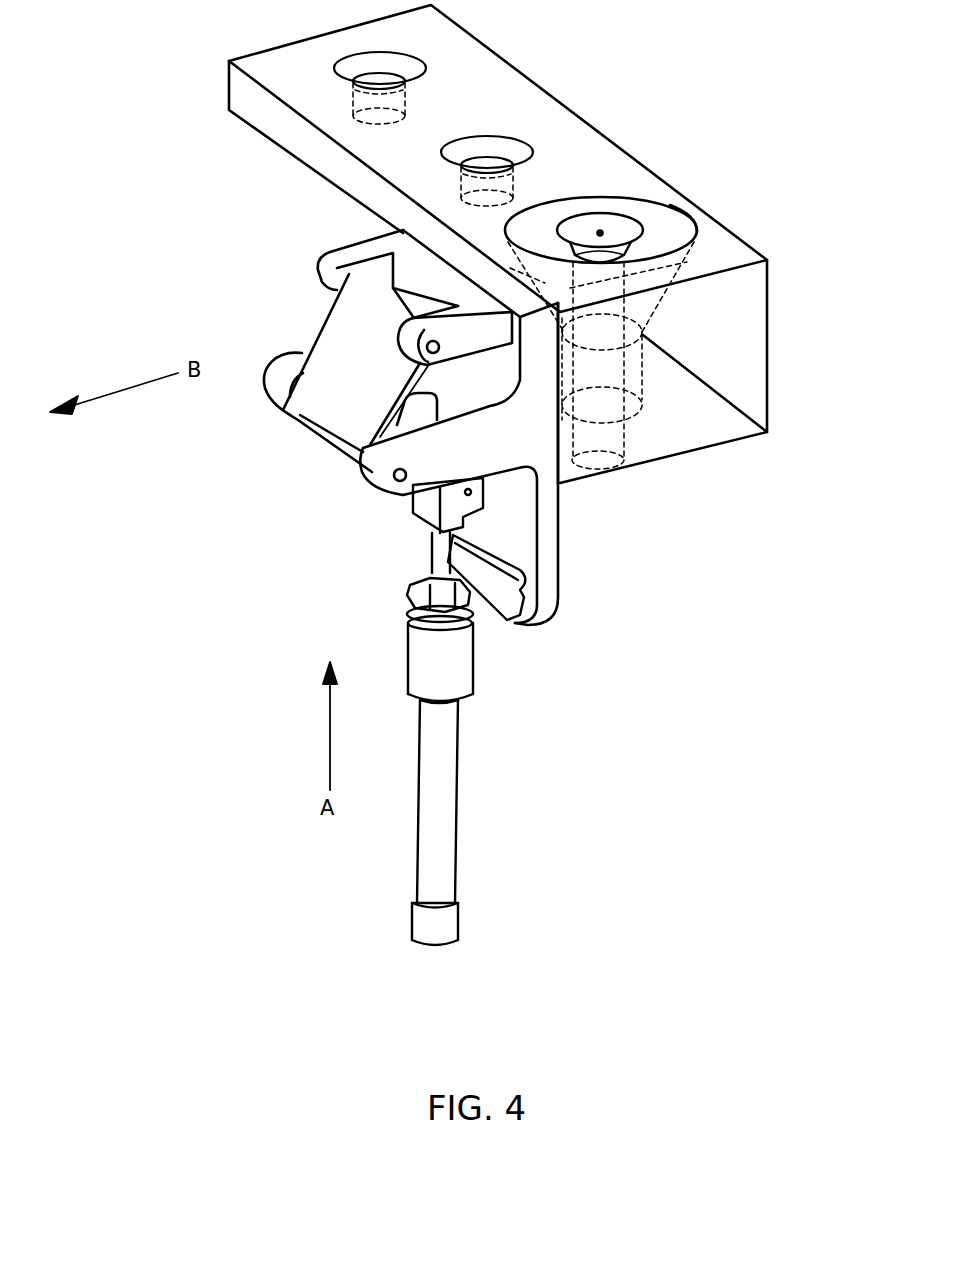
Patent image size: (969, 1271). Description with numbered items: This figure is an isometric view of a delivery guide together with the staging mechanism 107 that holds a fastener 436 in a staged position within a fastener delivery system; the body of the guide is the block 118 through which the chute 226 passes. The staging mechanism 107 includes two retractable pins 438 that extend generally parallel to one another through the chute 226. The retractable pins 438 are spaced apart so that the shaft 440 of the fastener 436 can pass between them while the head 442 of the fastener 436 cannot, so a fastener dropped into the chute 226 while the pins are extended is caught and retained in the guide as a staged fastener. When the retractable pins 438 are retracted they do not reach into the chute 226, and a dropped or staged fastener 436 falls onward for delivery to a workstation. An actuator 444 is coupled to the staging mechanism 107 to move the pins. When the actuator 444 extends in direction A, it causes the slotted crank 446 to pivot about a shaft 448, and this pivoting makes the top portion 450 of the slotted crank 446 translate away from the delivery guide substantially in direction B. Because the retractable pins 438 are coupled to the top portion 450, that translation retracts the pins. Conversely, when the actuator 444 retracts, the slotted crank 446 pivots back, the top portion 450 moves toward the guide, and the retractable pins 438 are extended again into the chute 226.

The staging mechanism 107 is at (317, 263).
The mounting body 118 is at (755, 312).
The chute 226 is at (698, 214).
The fastener 436 is at (677, 238).
The retractable pins 438 is at (545, 247).
The shaft 440 is at (607, 405).
The head 442 is at (613, 230).
The actuator 444 is at (475, 693).
The slotted crank 446 is at (333, 425).
The shaft 448 is at (400, 478).
The top portion 450 is at (363, 311).